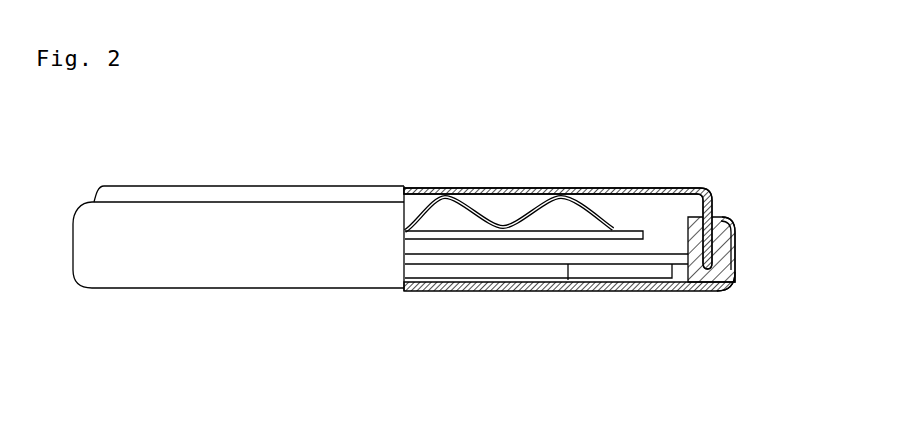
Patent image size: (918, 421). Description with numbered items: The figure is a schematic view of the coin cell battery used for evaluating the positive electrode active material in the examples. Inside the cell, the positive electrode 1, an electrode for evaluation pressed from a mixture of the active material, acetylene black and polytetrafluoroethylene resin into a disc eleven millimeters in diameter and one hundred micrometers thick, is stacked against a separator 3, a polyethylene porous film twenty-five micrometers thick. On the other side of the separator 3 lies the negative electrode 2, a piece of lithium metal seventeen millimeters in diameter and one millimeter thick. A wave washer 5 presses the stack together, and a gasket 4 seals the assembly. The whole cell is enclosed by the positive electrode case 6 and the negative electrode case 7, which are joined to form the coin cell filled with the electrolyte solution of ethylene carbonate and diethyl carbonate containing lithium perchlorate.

The positive electrode 1 is at (527, 291).
The negative electrode 2 is at (640, 246).
The separator 3 is at (664, 255).
The gasket 4 is at (736, 236).
The wave washer 5 is at (592, 208).
The positive electrode case 6 is at (485, 291).
The negative electrode case 7 is at (484, 188).